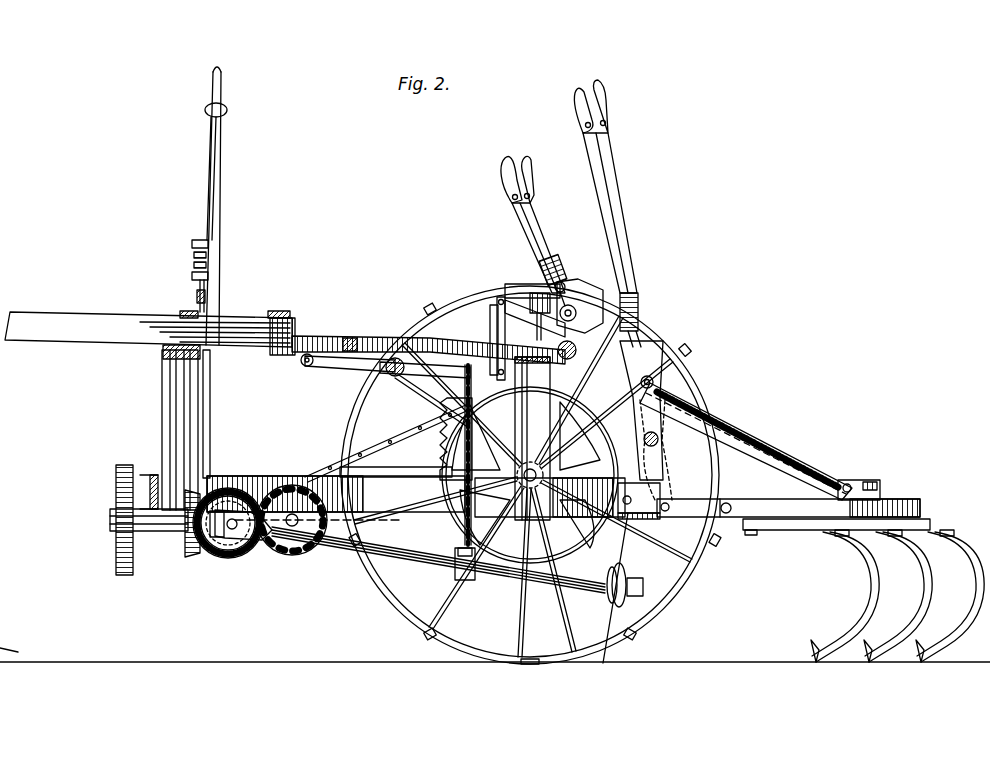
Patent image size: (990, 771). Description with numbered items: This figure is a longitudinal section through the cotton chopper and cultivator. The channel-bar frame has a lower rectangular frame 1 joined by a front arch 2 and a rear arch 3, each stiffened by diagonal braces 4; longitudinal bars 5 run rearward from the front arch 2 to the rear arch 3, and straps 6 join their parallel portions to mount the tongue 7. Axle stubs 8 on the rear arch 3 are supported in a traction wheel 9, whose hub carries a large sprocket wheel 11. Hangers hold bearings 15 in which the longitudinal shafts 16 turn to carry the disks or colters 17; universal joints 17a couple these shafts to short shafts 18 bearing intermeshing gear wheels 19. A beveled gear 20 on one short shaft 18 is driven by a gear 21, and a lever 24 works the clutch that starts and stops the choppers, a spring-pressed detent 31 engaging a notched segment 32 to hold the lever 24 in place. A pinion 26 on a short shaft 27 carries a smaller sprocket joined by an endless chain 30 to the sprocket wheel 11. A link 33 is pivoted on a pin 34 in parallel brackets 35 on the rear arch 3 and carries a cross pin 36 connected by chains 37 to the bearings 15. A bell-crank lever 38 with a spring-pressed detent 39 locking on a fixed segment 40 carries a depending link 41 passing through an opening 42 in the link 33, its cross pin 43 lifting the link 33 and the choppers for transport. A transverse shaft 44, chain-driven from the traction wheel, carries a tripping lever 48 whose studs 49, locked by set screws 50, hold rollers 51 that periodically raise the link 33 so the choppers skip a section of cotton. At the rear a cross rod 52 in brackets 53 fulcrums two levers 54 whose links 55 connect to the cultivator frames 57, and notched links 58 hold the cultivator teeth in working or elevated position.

The lower rectangular frame 1 is at (250, 478).
The front arch 2 is at (211, 370).
The rear arch 3 is at (548, 432).
The diagonal braces 4 is at (164, 381).
The longitudinal bars 5 is at (316, 334).
The straps 6 is at (206, 312).
The tongue 7 is at (68, 313).
The axle stubs 8 is at (531, 483).
The traction wheel 9 is at (690, 367).
The large sprocket wheel 11 is at (590, 408).
The bearings 15 is at (452, 566).
The longitudinal shafts 16 is at (548, 588).
The disks or colters 17 is at (610, 652).
The universal joints 17a is at (248, 560).
The short shafts 18 is at (114, 526).
The intermeshing gear wheels 19 is at (122, 560).
The beveled gear 20 is at (192, 548).
The gear 21 is at (222, 558).
The lever 24 is at (222, 262).
The pinion 26 is at (350, 501).
The short shaft 27 is at (296, 485).
The endless chain 30 is at (325, 556).
The spring-pressed detent 31 is at (196, 280).
The notched segment 32 is at (196, 297).
The link 33 is at (492, 348).
The pin 34 is at (576, 346).
The parallel brackets 35 is at (534, 327).
The cross pin 36 is at (470, 300).
The chains 37 is at (442, 452).
The bell-crank lever 38 is at (530, 190).
The spring-pressed detent 39 is at (566, 282).
The fixed segment 40 is at (578, 292).
The depending link 41 is at (499, 310).
The opening 42 is at (388, 430).
The cross pin 43 is at (532, 438).
The transverse shaft 44 is at (393, 378).
The tripping lever 48 is at (338, 368).
The studs 49 is at (322, 368).
The set screws 50 is at (358, 336).
The rollers 51 is at (300, 364).
The cross rod 52 is at (663, 430).
The brackets 53 is at (670, 515).
The levers 54 is at (663, 463).
The links 55 is at (700, 514).
The cultivator frames 57 is at (800, 535).
The notched links 58 is at (758, 450).